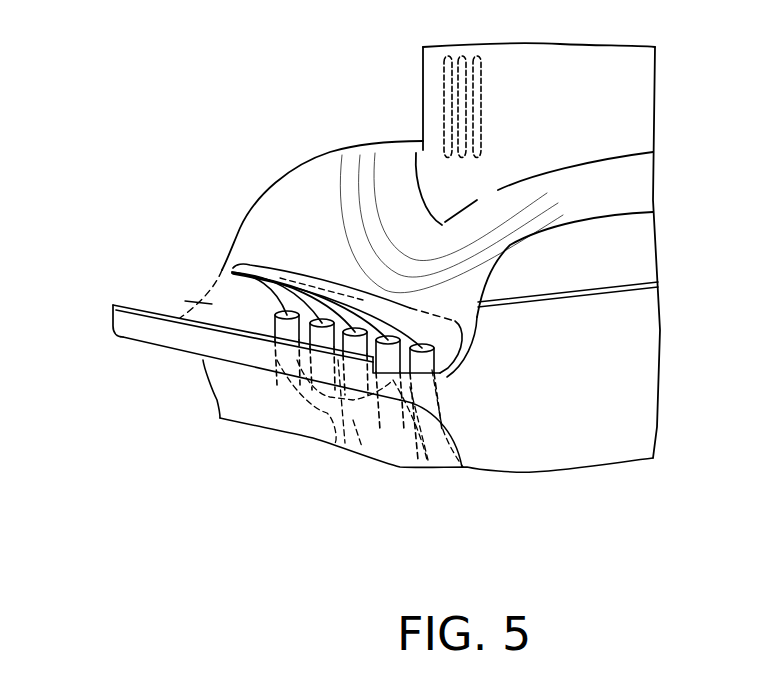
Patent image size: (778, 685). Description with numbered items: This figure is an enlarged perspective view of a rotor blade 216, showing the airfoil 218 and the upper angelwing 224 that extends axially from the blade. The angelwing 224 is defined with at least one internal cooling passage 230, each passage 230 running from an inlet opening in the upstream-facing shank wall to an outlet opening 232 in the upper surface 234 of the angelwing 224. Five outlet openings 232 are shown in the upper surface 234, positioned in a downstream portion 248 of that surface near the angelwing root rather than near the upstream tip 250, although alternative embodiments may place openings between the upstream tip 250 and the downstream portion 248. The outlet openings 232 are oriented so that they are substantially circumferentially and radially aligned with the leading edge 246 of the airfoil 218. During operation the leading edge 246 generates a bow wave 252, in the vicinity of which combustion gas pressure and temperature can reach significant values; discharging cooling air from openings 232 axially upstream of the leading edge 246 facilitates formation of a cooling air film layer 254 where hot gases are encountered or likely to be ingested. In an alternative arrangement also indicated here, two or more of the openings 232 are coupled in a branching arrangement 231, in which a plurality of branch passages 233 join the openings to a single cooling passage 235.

The rotor blade 216 is at (405, 74).
The airfoil 218 is at (597, 115).
The upper angelwing 224 is at (131, 328).
The cooling passage 230 is at (443, 437).
The branching arrangement 231 is at (275, 398).
The outlet opening 232 is at (232, 272).
The branch passage 233 is at (307, 405).
The upper surface 234 is at (440, 372).
The cooling passage 235 is at (337, 423).
The leading edge 246 is at (438, 157).
The downstream portion 248 is at (495, 333).
The upstream tip 250 is at (250, 318).
The bow wave 252 is at (325, 228).
The cooling air film layer 254 is at (178, 297).